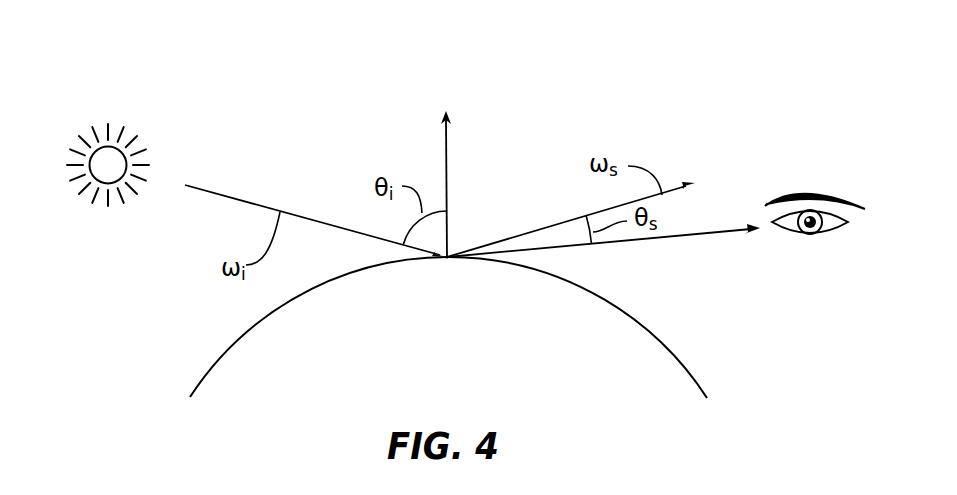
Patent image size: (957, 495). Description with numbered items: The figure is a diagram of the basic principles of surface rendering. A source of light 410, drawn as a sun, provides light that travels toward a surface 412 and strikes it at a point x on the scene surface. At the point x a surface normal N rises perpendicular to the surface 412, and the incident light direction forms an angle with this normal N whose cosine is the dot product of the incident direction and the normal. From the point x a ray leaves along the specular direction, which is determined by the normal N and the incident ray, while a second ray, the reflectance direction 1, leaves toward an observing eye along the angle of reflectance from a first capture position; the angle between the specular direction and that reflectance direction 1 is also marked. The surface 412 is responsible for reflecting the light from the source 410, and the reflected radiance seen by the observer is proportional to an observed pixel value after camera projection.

The source of light 410 is at (125, 128).
The surface 412 is at (670, 350).
The point on the scene surface x is at (447, 257).
The surface normal N is at (449, 170).
The view direction 1 is at (680, 235).